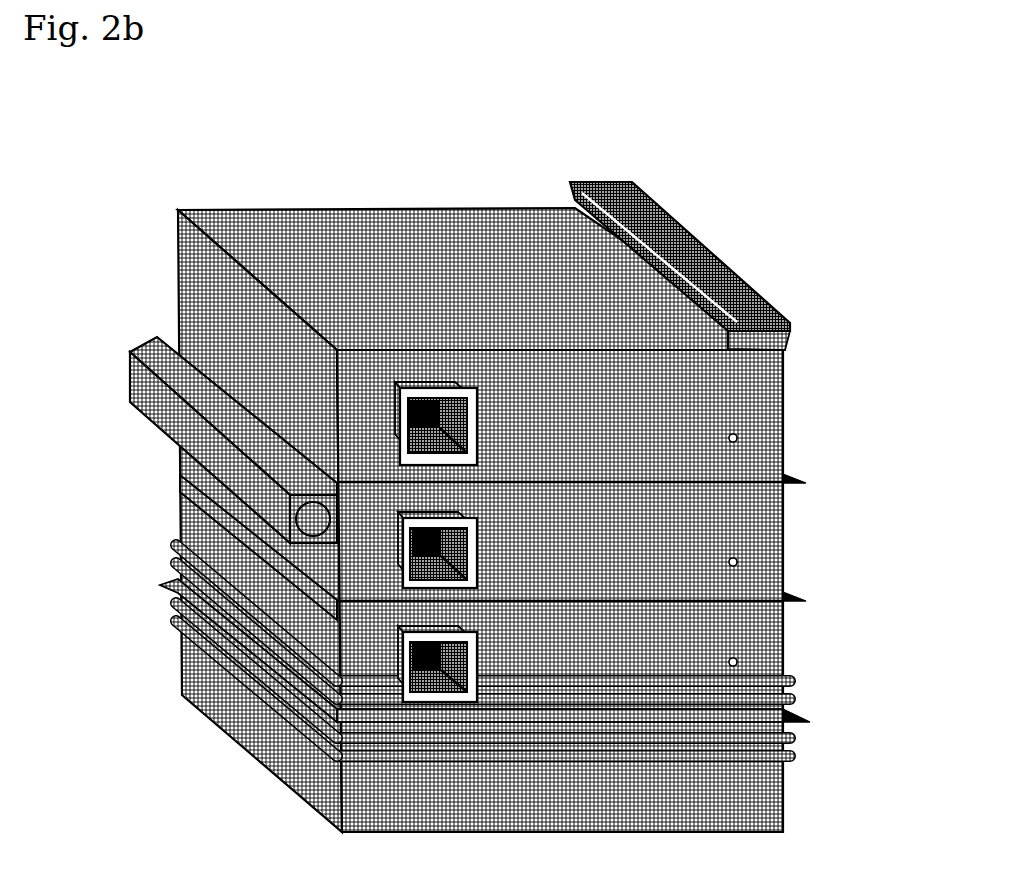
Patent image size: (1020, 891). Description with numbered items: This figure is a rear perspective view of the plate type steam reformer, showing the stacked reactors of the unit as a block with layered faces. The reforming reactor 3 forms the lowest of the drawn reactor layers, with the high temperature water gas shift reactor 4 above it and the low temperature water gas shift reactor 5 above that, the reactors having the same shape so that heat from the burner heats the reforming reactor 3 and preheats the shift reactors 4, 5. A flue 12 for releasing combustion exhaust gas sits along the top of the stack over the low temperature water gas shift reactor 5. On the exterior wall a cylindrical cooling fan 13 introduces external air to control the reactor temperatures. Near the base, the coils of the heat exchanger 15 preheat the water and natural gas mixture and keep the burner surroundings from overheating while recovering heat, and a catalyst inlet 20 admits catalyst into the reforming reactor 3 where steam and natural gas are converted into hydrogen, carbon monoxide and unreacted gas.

The flue 12 is at (703, 240).
The cooling fan 13 is at (130, 383).
The catalyst inlet 20 is at (455, 424).
The low temperature water gas shift reactor 5 is at (772, 433).
The high temperature water gas shift reactor 4 is at (783, 527).
The reforming reactor 3 is at (787, 628).
The heat exchanger 15 is at (797, 681).